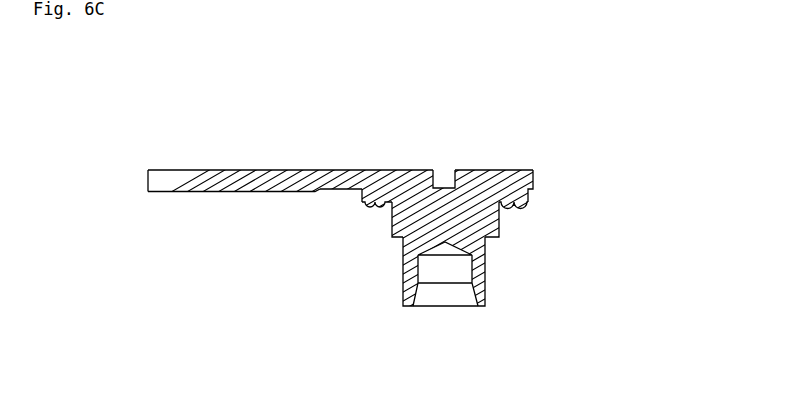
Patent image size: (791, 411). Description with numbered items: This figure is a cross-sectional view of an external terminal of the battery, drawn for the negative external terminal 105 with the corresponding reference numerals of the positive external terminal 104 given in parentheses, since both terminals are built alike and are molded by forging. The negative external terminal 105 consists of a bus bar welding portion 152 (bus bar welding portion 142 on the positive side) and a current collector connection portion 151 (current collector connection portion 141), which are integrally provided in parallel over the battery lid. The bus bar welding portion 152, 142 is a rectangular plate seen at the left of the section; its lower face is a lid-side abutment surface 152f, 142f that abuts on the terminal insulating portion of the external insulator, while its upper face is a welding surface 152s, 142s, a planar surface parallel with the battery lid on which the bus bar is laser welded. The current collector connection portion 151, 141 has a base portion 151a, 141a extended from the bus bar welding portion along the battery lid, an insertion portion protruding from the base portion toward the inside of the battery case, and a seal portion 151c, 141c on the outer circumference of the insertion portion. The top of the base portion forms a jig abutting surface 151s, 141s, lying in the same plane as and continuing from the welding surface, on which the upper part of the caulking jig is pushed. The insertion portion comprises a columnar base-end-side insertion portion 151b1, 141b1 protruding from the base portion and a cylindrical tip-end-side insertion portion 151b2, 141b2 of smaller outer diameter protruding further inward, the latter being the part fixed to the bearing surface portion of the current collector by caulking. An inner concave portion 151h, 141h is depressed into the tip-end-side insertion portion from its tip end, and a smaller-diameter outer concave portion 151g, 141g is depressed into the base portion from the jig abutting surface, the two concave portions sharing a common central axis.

The negative external terminal 105 is at (383, 205).
The positive external terminal 104 is at (133, 82).
The bus bar welding portion 152 is at (206, 187).
The plate 142 is at (206, 187).
The welding surface 152s is at (233, 136).
The plate upper surface 142s is at (245, 170).
The lid-side abutment surface 152f is at (226, 231).
The plate lower surface 142f is at (220, 192).
The current collector connection portion 151 is at (508, 242).
The holder 141 is at (508, 242).
The jig abutting surface 151s is at (425, 136).
The holder upper surface 141s is at (390, 170).
The base portion 151a is at (542, 171).
The flange portion 141a is at (533, 172).
The seal portion 151c is at (541, 199).
The rib 141c is at (526, 196).
The base-end-side insertion portion 151b1 is at (566, 250).
The first body portion 141b1 is at (499, 227).
The tip-end-side insertion portion 151b2 is at (553, 290).
The second body portion 141b2 is at (485, 267).
The outer concave portion 151g is at (545, 144).
The groove 141g is at (445, 188).
The inner concave portion 151h is at (498, 313).
The hole 141h is at (445, 295).